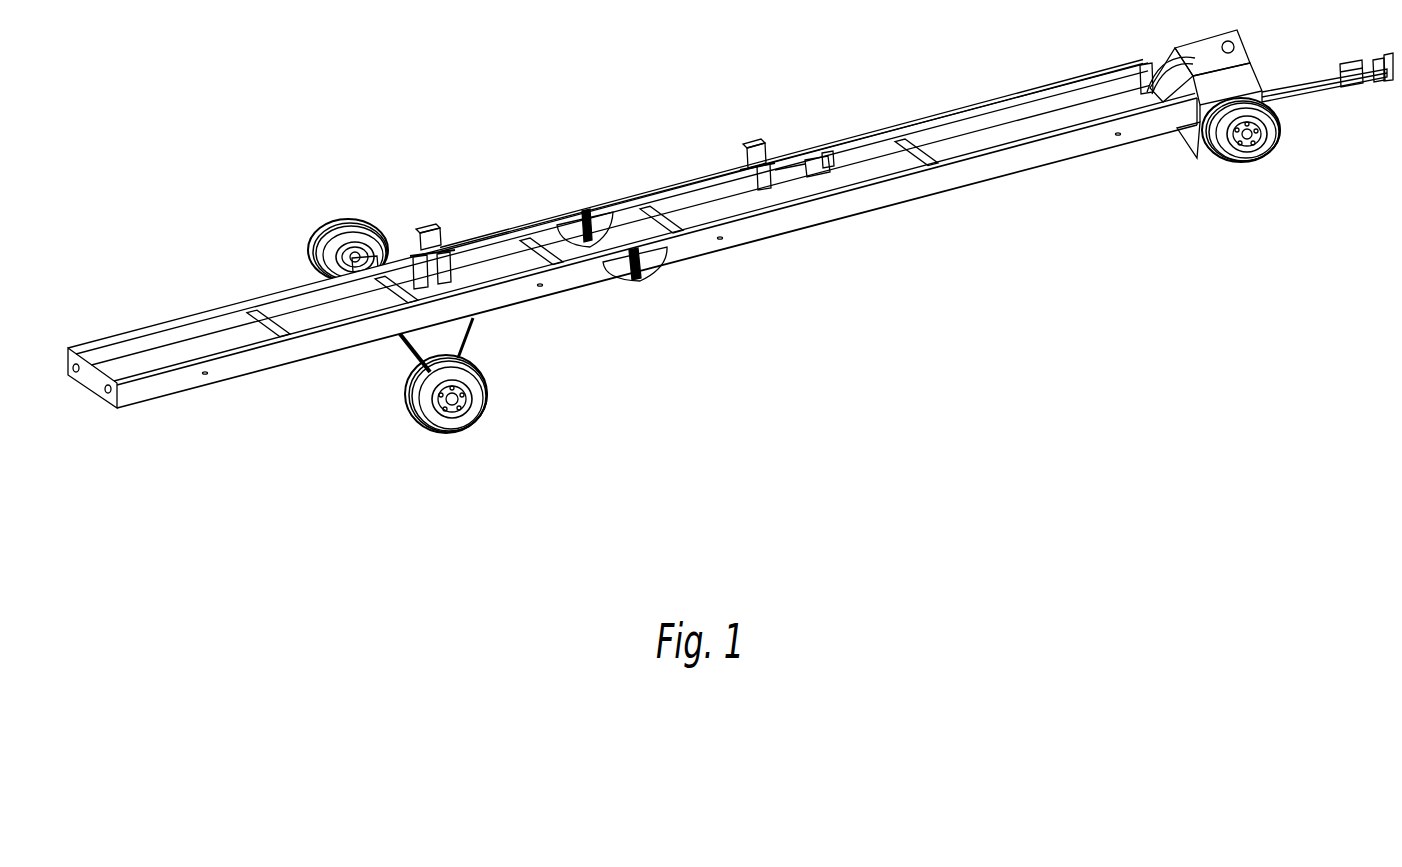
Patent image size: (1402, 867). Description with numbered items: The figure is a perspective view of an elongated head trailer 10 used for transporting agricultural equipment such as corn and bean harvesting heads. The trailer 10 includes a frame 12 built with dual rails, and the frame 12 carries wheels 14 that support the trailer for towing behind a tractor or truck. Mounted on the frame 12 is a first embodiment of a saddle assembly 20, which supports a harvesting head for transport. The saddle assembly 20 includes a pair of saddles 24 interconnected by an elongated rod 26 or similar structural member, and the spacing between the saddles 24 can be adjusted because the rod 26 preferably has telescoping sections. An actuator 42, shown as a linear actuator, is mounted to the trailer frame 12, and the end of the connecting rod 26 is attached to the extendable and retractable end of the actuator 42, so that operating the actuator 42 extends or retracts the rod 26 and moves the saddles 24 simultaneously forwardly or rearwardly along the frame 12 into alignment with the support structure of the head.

The trailer 10 is at (887, 263).
The frame 12 is at (985, 110).
The wheels 14 is at (338, 224).
The saddle assembly 20 is at (777, 118).
The saddles 24 is at (430, 230).
The rod 26 is at (692, 192).
The actuator 42 is at (798, 167).